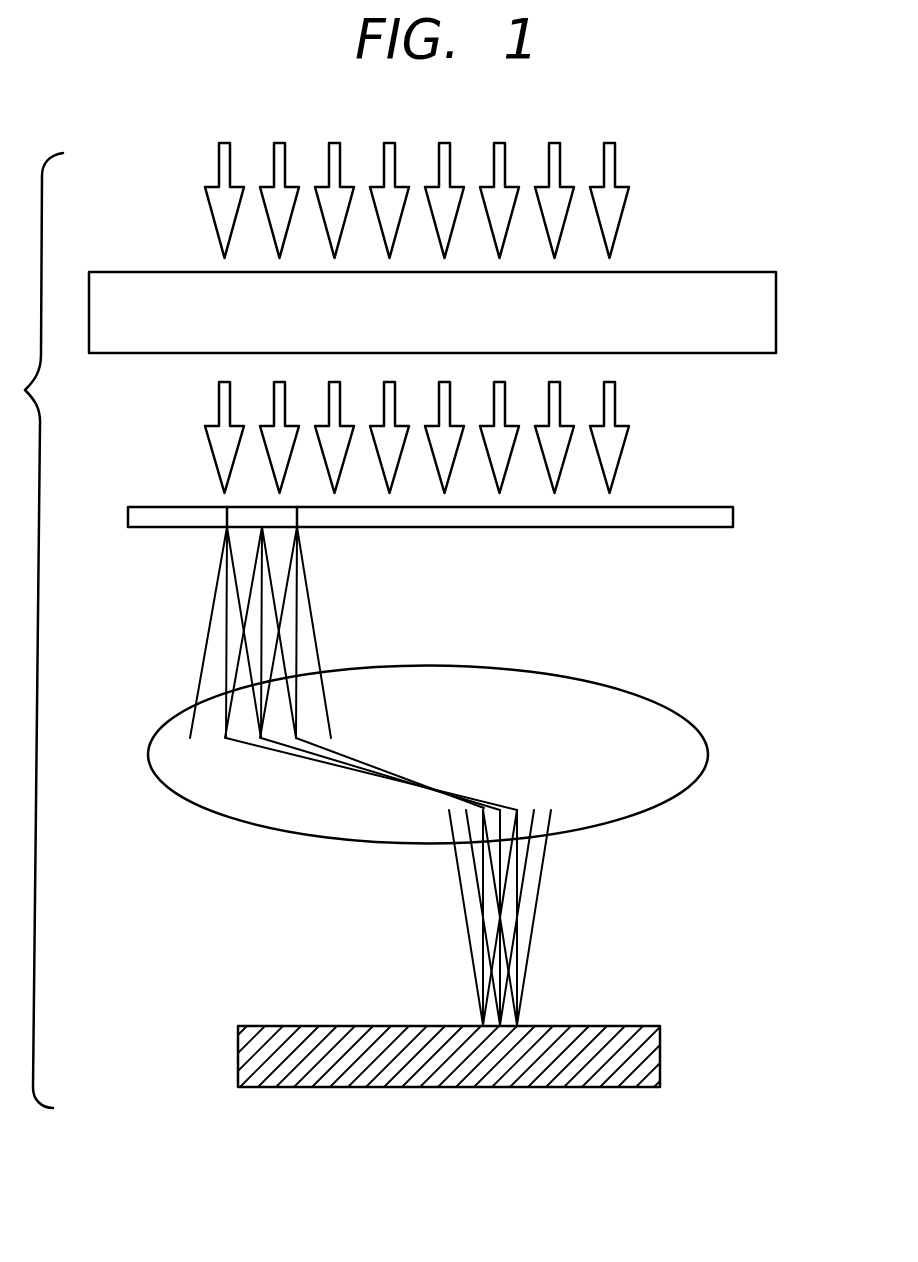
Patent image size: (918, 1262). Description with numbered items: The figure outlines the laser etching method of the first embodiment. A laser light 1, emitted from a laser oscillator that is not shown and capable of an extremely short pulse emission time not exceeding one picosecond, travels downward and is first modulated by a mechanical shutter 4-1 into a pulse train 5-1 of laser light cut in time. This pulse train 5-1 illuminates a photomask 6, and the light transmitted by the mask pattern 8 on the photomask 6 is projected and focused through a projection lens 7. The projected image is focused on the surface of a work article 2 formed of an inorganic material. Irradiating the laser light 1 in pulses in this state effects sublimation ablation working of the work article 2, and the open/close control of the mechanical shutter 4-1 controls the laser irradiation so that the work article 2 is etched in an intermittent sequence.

The laser light 1 is at (611, 165).
The mechanical shutter 4-1 is at (757, 354).
The pulse train 5-1 is at (618, 440).
The photomask 6 is at (680, 528).
The mask pattern 8 is at (245, 507).
The projection lens 7 is at (685, 745).
The work article 2 is at (662, 1043).